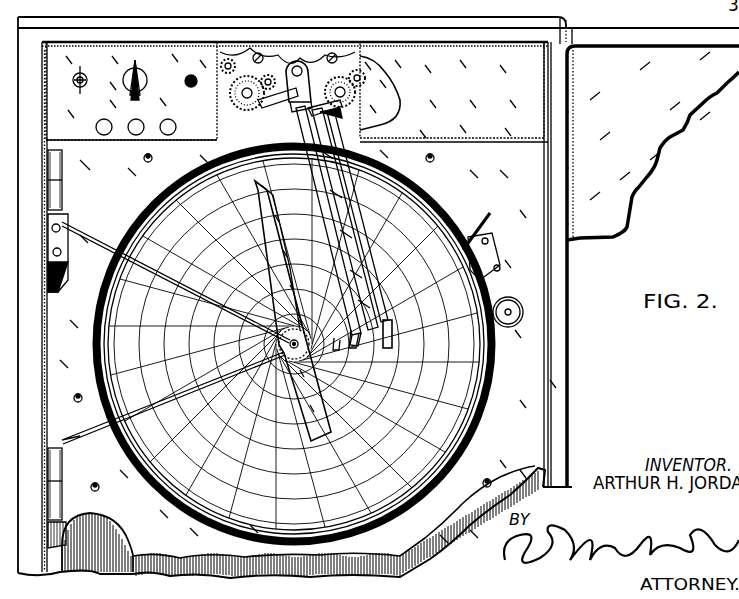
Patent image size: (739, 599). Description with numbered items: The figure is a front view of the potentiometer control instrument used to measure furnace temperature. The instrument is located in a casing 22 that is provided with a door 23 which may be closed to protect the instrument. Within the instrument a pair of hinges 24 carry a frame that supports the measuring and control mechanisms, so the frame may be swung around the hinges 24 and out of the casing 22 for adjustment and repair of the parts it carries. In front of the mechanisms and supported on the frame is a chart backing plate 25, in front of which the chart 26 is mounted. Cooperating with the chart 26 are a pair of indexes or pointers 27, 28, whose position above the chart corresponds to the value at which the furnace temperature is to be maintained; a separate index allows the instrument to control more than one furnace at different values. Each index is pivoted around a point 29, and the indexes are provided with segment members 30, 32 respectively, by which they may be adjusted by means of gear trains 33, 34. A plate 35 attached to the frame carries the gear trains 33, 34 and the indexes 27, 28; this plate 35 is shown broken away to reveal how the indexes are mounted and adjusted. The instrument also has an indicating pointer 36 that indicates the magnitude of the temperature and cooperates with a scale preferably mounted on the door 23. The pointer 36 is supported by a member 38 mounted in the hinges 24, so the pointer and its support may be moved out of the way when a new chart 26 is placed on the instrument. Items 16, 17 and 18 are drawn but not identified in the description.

The pivot 16 is at (297, 64).
The pen arm 17 is at (356, 231).
The pen holder 18 is at (393, 339).
The casing 22 is at (437, 27).
The door 23 is at (662, 152).
The hinges 24 is at (63, 194).
The chart backing plate 25 is at (523, 279).
The chart 26 is at (455, 453).
The index 27 is at (350, 338).
The index 28 is at (336, 351).
The pivot point 29 is at (278, 107).
The segment member 30 is at (349, 101).
The segment member 32 is at (241, 107).
The gear train 33 is at (367, 77).
The gear train 34 is at (226, 58).
The plate 35 is at (511, 130).
The indicating pointer 36 is at (318, 440).
The member 38 is at (168, 415).